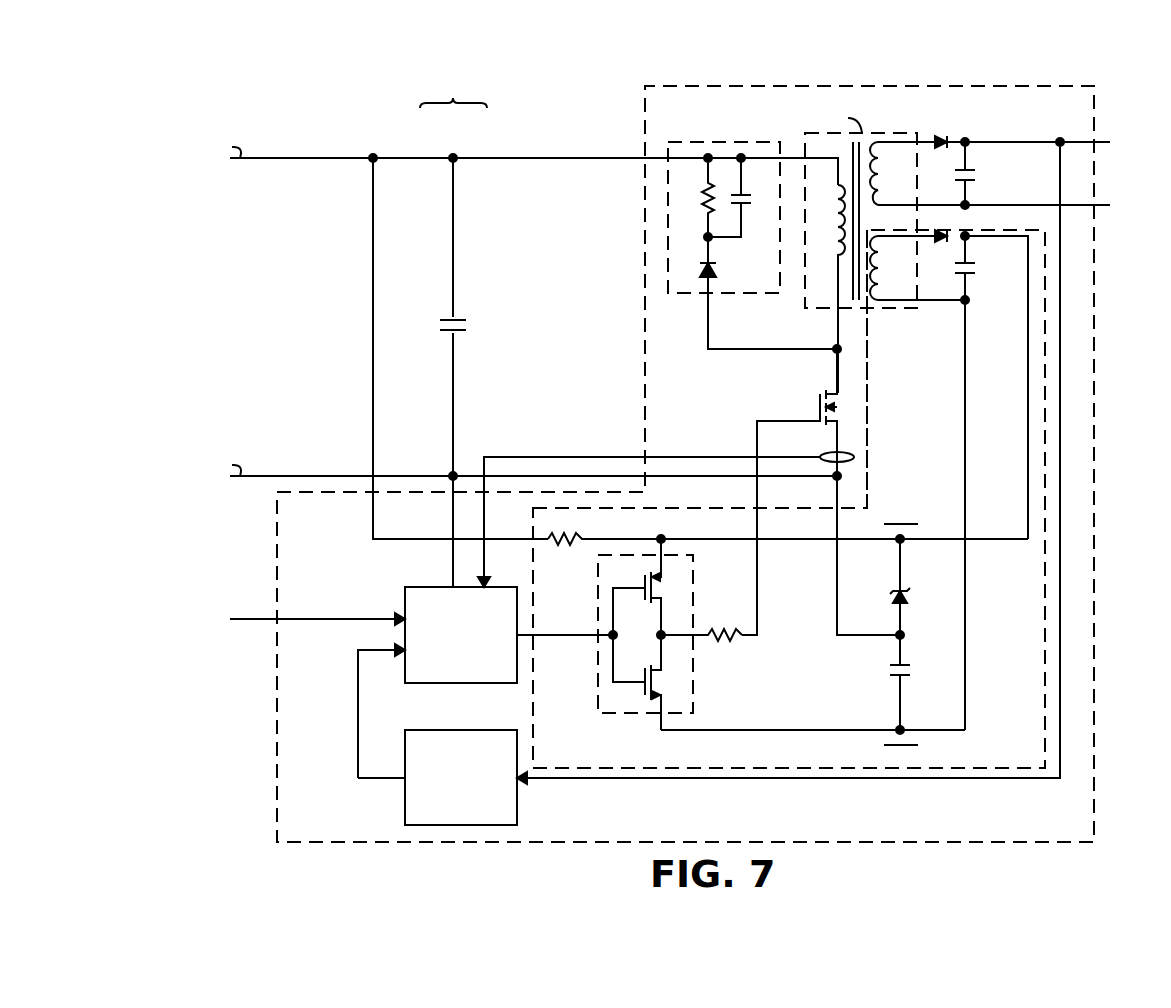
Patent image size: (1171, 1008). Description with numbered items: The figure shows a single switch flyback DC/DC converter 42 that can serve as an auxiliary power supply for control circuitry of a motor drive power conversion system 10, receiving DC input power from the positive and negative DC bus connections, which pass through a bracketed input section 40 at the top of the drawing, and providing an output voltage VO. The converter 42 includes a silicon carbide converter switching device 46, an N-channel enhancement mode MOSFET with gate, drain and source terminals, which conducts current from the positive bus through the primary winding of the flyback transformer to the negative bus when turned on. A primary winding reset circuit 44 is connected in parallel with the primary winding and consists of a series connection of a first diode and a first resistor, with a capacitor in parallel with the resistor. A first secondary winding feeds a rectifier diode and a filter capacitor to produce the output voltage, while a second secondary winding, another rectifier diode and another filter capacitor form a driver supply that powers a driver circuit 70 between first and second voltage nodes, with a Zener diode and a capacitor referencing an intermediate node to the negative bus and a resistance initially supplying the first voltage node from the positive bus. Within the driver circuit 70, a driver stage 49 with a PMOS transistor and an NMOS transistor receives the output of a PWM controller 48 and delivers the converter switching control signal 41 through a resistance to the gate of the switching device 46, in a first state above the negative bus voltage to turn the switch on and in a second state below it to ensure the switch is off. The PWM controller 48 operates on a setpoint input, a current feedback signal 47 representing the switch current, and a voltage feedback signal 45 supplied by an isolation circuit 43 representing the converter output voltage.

The motor drive power conversion system 10 is at (366, 74).
The DC bus input with capacitor C4 40 is at (453, 100).
The DC/DC converter 42 is at (645, 100).
The primary winding reset circuit 44 is at (736, 142).
The silicon carbide converter switching device 46 is at (813, 390).
The converter switching control signal 41 is at (757, 446).
The current feedback signal 47 is at (518, 457).
The driver circuit 70 is at (533, 516).
The PWM controller 48 is at (428, 587).
The driver stage 49 is at (598, 596).
The voltage feedback signal 45 is at (358, 719).
The isolation circuit 43 is at (470, 730).